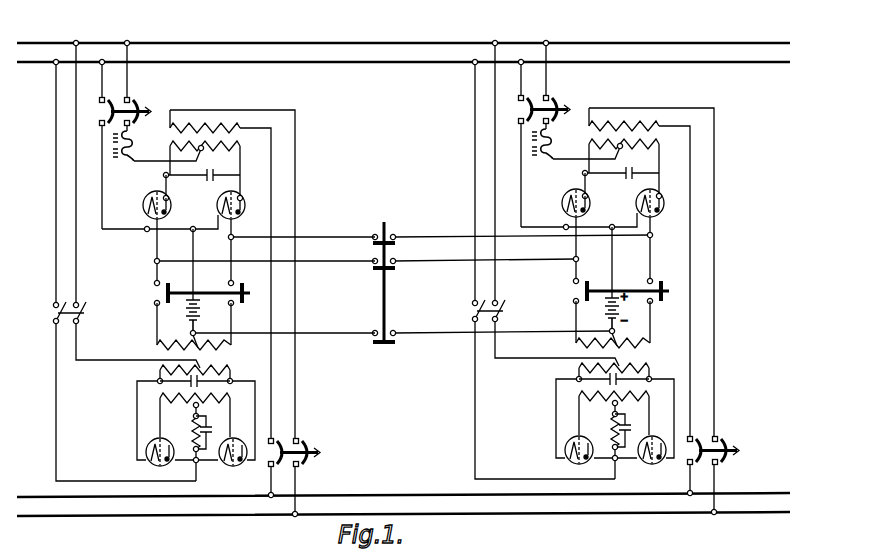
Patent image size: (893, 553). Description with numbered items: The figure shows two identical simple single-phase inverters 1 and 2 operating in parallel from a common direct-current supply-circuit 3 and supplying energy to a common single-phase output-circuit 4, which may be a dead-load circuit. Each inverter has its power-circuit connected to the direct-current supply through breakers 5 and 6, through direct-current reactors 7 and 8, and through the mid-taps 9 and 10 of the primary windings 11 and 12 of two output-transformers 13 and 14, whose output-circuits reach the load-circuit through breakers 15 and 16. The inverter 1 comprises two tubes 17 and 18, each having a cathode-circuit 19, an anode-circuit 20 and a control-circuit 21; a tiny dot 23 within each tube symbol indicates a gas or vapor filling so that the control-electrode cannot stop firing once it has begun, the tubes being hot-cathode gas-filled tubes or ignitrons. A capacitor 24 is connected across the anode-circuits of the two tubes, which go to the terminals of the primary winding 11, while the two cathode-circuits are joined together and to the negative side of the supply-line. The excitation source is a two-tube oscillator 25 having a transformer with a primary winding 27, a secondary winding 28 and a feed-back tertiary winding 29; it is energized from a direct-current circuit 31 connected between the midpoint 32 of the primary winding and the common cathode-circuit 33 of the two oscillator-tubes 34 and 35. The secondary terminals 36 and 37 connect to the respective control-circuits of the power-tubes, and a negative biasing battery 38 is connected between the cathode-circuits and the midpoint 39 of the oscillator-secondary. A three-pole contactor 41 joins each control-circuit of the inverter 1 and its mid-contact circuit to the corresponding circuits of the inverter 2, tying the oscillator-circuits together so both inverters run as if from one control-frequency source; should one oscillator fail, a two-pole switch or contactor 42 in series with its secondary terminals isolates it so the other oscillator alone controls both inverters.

The inverter 1 is at (173, 202).
The inverter 2 is at (592, 200).
The direct-current supply-circuit 3 is at (376, 62).
The single-phase output-circuit 4 is at (380, 514).
The breaker 5 is at (140, 106).
The breaker 6 is at (549, 103).
The direct-current reactor 7 is at (132, 149).
The direct-current reactor 8 is at (550, 141).
The mid-tap 9 is at (199, 150).
The mid-tap 10 is at (601, 154).
The primary winding 11 is at (240, 147).
The primary winding 12 is at (639, 154).
The output-transformer 13 is at (205, 126).
The output-transformer 14 is at (624, 110).
The breaker 15 is at (311, 455).
The breaker 16 is at (725, 445).
The tube 17 is at (143, 199).
The tube 18 is at (219, 197).
The cathode-circuit 19 is at (145, 228).
The anode-circuit 20 is at (164, 176).
The control-circuit 21 is at (155, 252).
The dot 23 is at (193, 227).
The capacitor 24 is at (214, 177).
The two-tube oscillator 25 is at (186, 418).
The primary winding 27 is at (236, 373).
The secondary winding 28 is at (234, 347).
The tertiary winding 29 is at (232, 401).
The direct-current circuit 31 is at (58, 380).
The midpoint 32 is at (207, 369).
The common cathode-circuit 33 is at (200, 465).
The oscillator-tube 34 is at (147, 463).
The oscillator-tube 35 is at (237, 467).
The secondary terminal 36 is at (156, 308).
The secondary terminal 37 is at (232, 322).
The negative biasing battery 38 is at (204, 311).
The midpoint 39 is at (190, 344).
The three-pole contactor 41 is at (388, 236).
The two-pole switch or contactor 42 is at (250, 293).